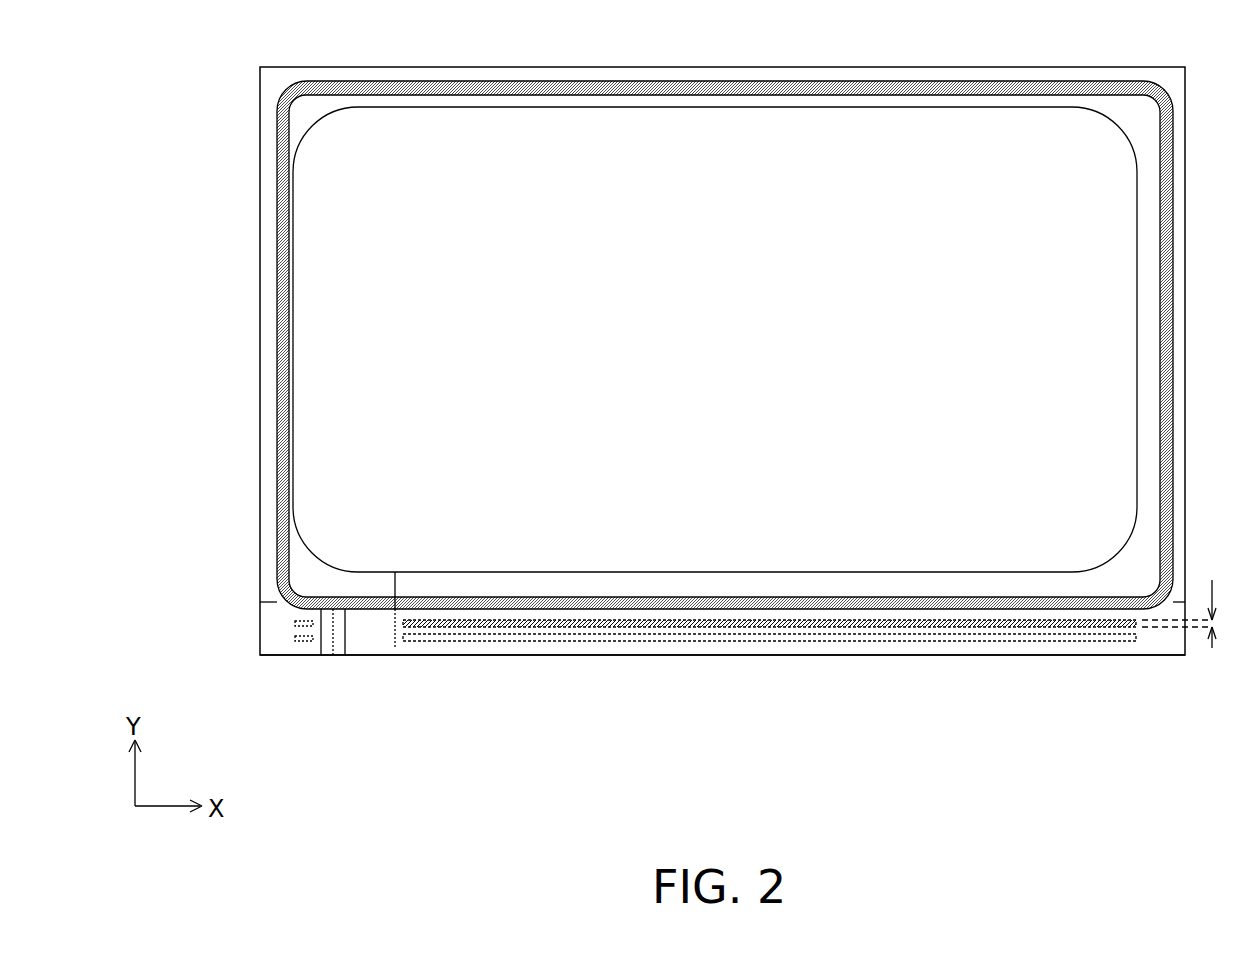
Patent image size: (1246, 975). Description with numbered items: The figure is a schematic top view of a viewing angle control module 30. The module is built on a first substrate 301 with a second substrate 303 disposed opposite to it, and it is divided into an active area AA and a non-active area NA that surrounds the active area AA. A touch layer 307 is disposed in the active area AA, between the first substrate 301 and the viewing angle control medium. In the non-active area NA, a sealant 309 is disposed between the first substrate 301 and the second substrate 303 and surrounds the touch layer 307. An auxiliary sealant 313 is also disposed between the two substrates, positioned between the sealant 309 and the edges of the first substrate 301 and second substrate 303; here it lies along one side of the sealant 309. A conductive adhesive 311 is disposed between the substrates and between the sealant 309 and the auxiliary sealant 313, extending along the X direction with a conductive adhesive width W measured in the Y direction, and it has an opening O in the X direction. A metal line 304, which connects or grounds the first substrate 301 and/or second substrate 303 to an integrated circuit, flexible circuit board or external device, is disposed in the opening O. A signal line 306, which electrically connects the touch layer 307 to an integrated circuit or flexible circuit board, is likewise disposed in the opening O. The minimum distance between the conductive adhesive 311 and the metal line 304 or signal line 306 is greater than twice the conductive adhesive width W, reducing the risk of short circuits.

The viewing angle control module 30 is at (226, 32).
The first substrate 301 is at (260, 450).
The non-active area NA is at (268, 201).
The active area AA is at (741, 351).
The touch layer 307 is at (393, 262).
The sealant 309 is at (285, 340).
The metal line 304 is at (322, 655).
The signal line 306 is at (395, 627).
The opening O is at (364, 645).
The conductive adhesive 311 is at (690, 627).
The auxiliary sealant 313 is at (560, 641).
The second substrate 303 is at (1160, 655).
The conductive adhesive width W is at (1225, 613).